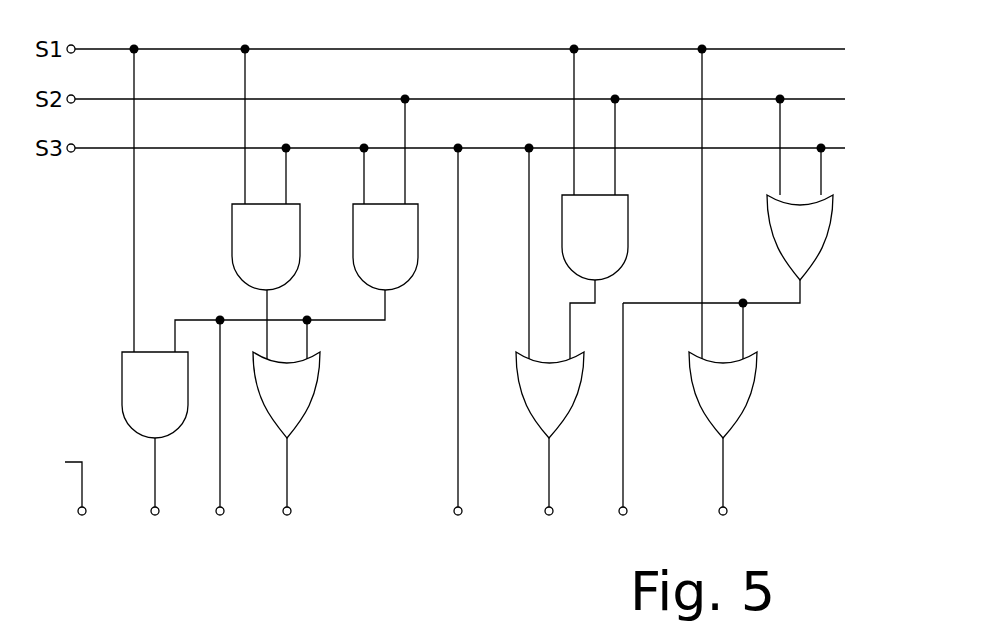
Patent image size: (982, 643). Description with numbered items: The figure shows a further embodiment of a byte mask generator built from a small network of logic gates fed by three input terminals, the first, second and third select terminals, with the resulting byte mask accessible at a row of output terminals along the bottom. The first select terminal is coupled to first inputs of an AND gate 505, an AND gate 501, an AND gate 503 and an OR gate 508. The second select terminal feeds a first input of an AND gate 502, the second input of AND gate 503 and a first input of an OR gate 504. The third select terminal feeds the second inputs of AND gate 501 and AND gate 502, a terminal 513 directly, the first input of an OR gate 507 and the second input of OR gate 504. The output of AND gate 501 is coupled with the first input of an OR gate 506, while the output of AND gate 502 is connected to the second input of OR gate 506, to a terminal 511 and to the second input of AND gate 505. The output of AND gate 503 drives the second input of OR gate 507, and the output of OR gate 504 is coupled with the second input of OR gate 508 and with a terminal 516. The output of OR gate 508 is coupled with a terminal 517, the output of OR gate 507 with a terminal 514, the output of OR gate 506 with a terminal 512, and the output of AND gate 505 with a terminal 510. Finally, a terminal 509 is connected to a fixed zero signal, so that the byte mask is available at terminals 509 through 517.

The AND gate 501 is at (258, 264).
The AND gate 502 is at (378, 264).
The AND gate 503 is at (600, 270).
The OR gate 504 is at (797, 262).
The AND gate 505 is at (147, 412).
The OR gate 506 is at (287, 412).
The OR gate 507 is at (541, 412).
The OR gate 508 is at (717, 412).
The terminal 509 is at (64, 502).
The terminal 510 is at (153, 496).
The terminal 511 is at (219, 437).
The terminal 512 is at (286, 496).
The terminal 513 is at (458, 351).
The terminal 514 is at (548, 496).
The terminal 516 is at (622, 429).
The terminal 517 is at (721, 496).